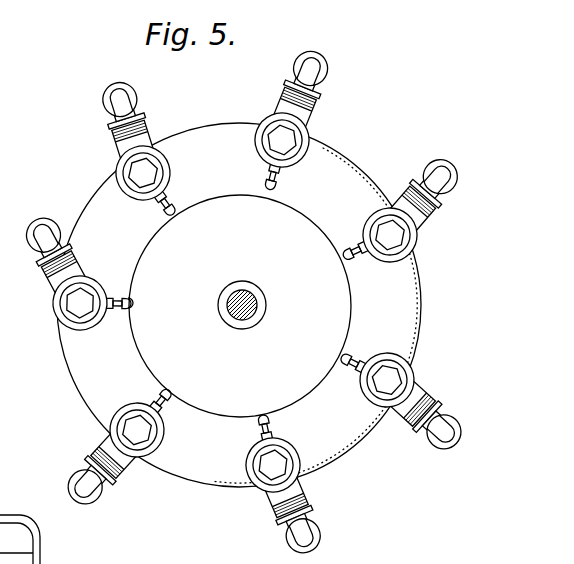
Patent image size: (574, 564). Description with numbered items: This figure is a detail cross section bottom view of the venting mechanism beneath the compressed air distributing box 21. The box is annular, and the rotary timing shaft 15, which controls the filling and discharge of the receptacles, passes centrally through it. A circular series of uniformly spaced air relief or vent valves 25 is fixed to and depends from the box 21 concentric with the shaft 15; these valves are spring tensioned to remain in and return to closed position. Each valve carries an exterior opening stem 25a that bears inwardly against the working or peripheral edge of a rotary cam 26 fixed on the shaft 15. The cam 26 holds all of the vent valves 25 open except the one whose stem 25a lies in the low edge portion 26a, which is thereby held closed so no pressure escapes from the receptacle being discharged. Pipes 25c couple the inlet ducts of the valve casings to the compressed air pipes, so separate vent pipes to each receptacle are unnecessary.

The rotary timing shaft 15 is at (242, 322).
The compressed air distributing box 21 is at (405, 340).
The air relief or vent valve 25 is at (94, 278).
The opening stem 25a is at (172, 205).
The pipe 25c is at (327, 78).
The rotary cam 26 is at (222, 393).
The low edge portion 26a is at (138, 298).